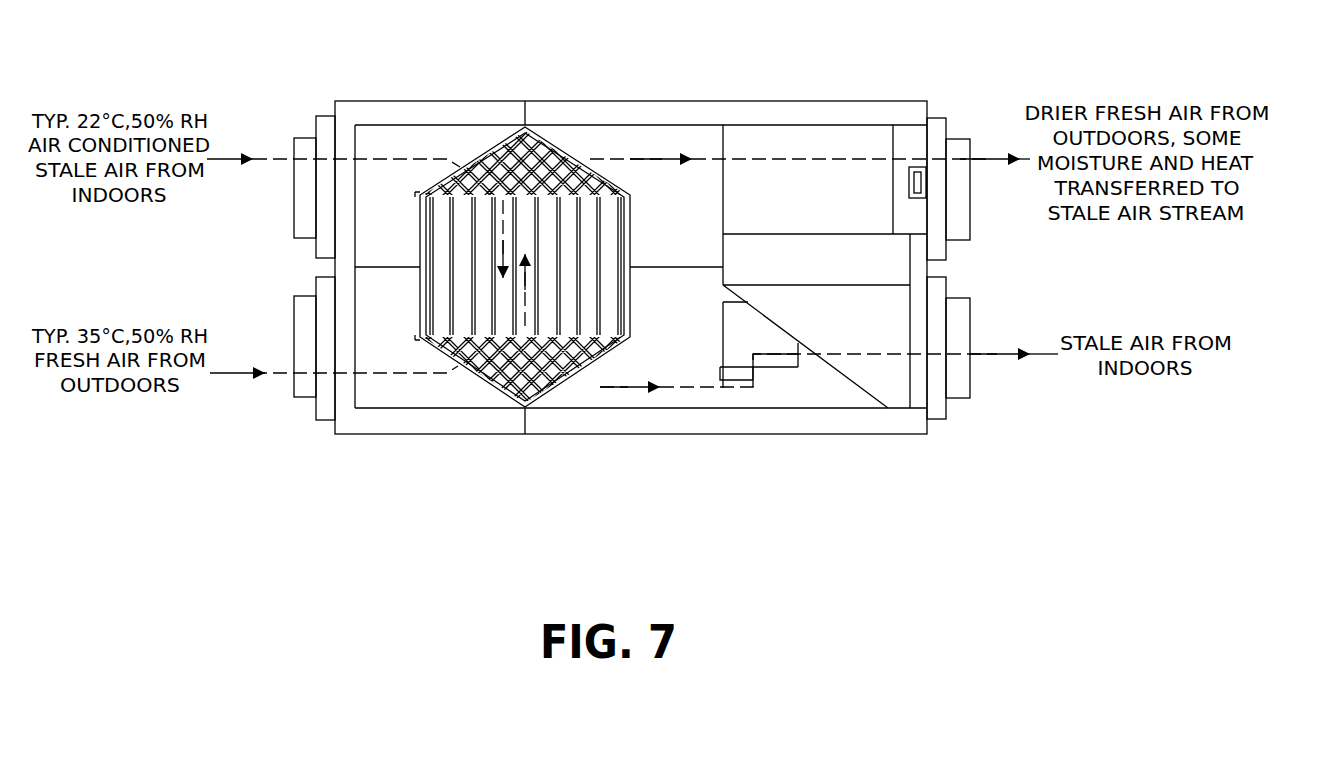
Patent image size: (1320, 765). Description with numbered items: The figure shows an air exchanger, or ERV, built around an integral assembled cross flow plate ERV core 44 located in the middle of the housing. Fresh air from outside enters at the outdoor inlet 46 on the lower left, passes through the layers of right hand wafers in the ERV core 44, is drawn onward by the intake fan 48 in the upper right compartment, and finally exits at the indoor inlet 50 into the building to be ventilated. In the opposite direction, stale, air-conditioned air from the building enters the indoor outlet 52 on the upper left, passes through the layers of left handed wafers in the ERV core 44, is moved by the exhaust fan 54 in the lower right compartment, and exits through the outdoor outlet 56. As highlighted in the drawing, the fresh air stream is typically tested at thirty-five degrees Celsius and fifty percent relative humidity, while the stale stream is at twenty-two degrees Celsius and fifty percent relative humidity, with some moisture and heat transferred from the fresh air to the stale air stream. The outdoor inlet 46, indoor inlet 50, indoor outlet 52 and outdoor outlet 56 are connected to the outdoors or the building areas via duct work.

The ERV core 44 is at (440, 353).
The outdoor inlet 46 is at (310, 384).
The intake fan 48 is at (749, 148).
The indoor inlet 50 is at (958, 150).
The indoor outlet 52 is at (303, 192).
The exhaust fan 54 is at (742, 332).
The outdoor outlet 56 is at (960, 378).